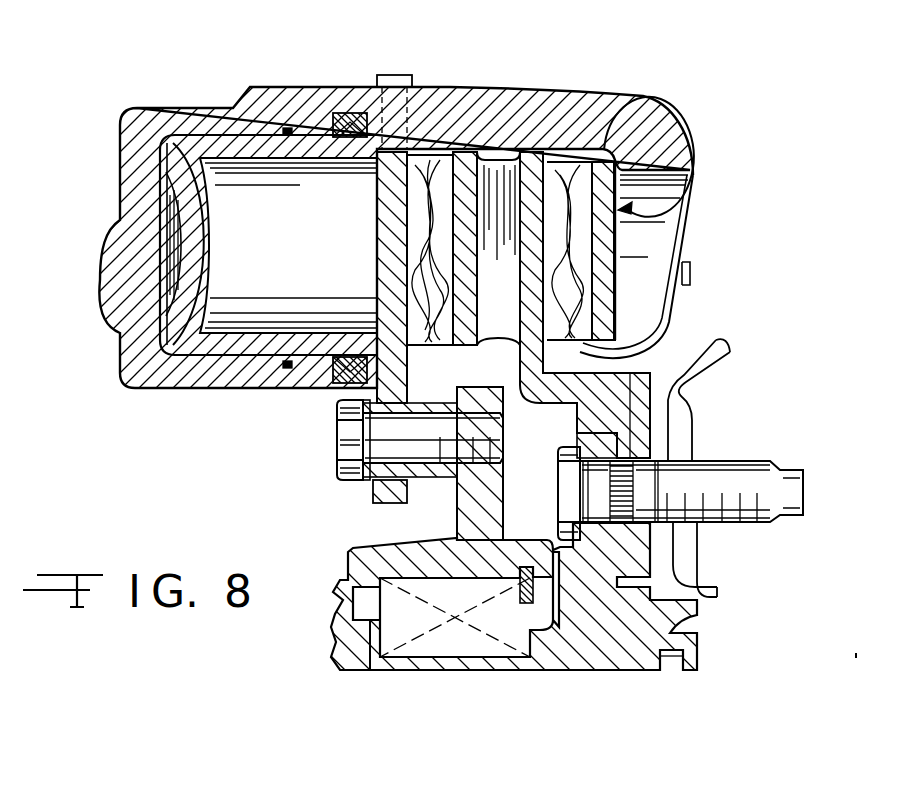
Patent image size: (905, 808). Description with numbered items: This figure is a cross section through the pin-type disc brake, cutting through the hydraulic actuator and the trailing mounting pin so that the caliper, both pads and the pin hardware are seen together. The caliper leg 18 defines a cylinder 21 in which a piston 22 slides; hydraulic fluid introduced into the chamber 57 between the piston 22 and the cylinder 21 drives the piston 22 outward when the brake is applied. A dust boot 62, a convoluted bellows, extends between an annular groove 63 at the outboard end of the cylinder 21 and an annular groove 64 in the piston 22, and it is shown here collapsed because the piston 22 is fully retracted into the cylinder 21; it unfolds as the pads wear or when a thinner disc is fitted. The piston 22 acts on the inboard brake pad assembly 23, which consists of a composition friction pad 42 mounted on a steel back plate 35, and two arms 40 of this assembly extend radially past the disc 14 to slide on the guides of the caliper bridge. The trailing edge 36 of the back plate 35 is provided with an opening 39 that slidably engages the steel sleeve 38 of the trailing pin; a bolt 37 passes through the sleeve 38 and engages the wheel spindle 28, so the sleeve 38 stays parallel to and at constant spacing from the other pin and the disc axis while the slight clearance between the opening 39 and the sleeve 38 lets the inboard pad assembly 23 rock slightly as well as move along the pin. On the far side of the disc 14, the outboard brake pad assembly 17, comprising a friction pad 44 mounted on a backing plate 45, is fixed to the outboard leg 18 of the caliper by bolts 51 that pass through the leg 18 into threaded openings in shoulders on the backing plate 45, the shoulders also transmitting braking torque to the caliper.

The disc 14 is at (503, 153).
The outboard brake pad assembly 17 is at (667, 145).
The outboard leg 18 is at (690, 196).
The cylinder 21 is at (217, 138).
The piston 22 is at (193, 357).
The inboard brake pad assembly 23 is at (377, 253).
The wheel spindle 28 is at (474, 387).
The back plate 35 is at (408, 153).
The trailing edge 36 is at (377, 503).
The bolt 37 is at (334, 440).
The sleeve 38 is at (433, 480).
The opening 39 is at (375, 488).
The arms 40 is at (396, 75).
The friction pad 42 is at (455, 152).
The friction pad 44 is at (632, 360).
The backing plate 45 is at (638, 93).
The bolts 51 is at (688, 266).
The chamber 57 is at (157, 195).
The dust boot 62 is at (357, 150).
The annular groove 63 is at (340, 113).
The annular groove 64 is at (340, 137).